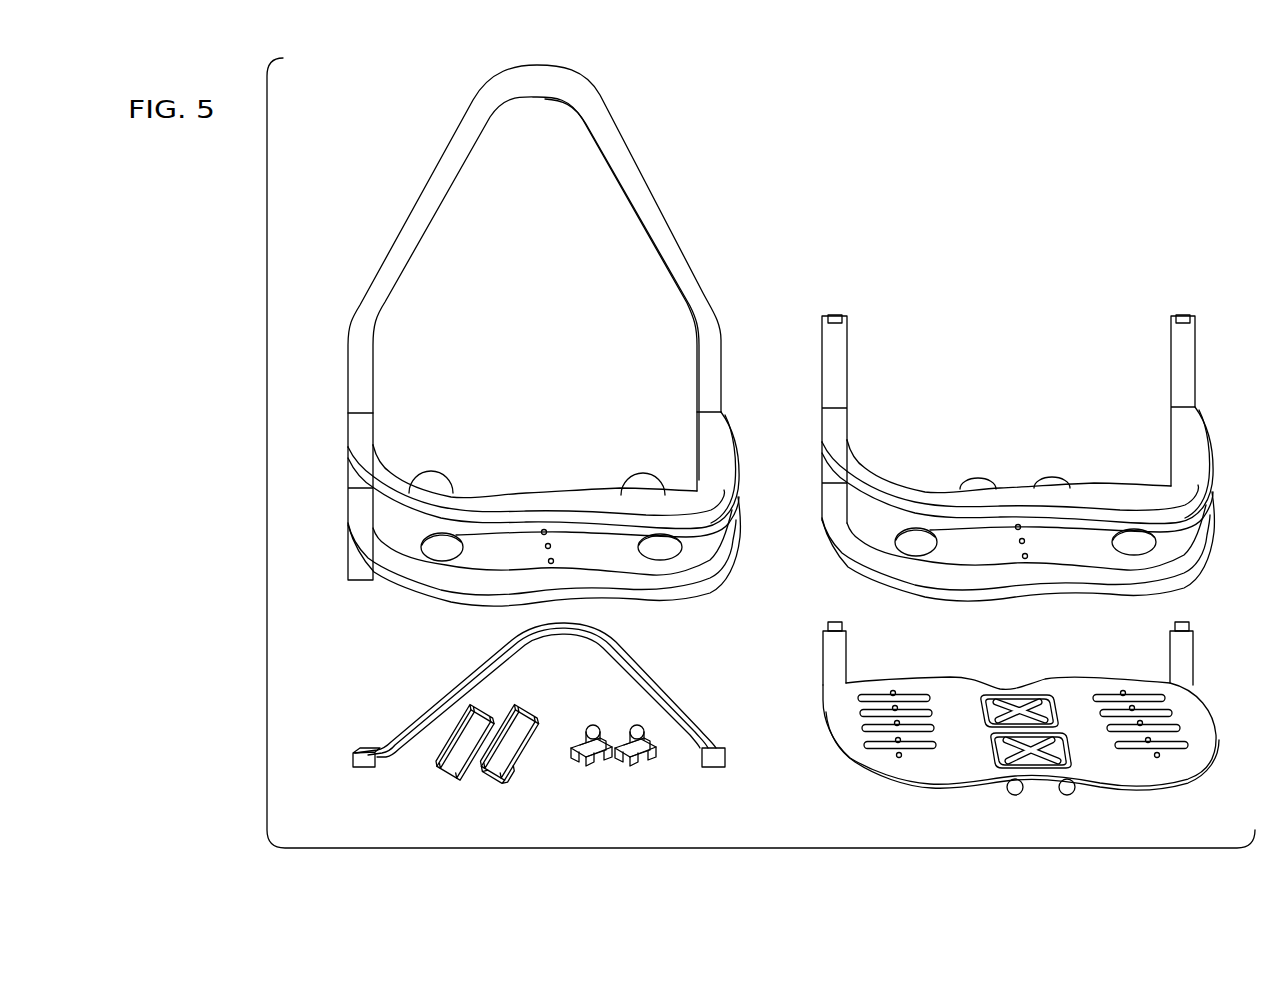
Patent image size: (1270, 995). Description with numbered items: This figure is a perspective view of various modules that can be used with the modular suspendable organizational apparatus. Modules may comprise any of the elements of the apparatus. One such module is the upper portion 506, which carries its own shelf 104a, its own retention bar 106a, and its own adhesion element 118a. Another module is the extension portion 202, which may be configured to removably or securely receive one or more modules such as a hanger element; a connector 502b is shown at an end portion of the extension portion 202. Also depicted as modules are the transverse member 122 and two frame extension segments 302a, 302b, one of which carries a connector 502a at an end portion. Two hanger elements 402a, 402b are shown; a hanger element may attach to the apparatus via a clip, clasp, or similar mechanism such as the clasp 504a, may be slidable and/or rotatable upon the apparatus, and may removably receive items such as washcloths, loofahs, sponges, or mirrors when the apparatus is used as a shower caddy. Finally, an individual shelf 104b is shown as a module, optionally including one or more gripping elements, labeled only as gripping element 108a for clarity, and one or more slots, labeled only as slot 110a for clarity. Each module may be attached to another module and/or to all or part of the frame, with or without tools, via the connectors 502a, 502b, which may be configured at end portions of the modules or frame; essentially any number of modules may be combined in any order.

The upper portion 506 is at (684, 134).
The retention bar 106a is at (510, 470).
The shelf 104a is at (362, 523).
The adhesion element 118a is at (640, 468).
The extension portion 202 is at (1018, 426).
The connector 502b is at (838, 372).
The transverse member 122 is at (428, 680).
The frame extension segment 302a is at (453, 768).
The frame extension segment 302b is at (529, 754).
The connector 502a is at (492, 782).
The hanger element 402a is at (659, 736).
The hanger element 402b is at (638, 730).
The clasp 504a is at (577, 758).
The shelf 104b is at (1021, 723).
The gripping element 108a is at (910, 697).
The slot 110a is at (1013, 708).